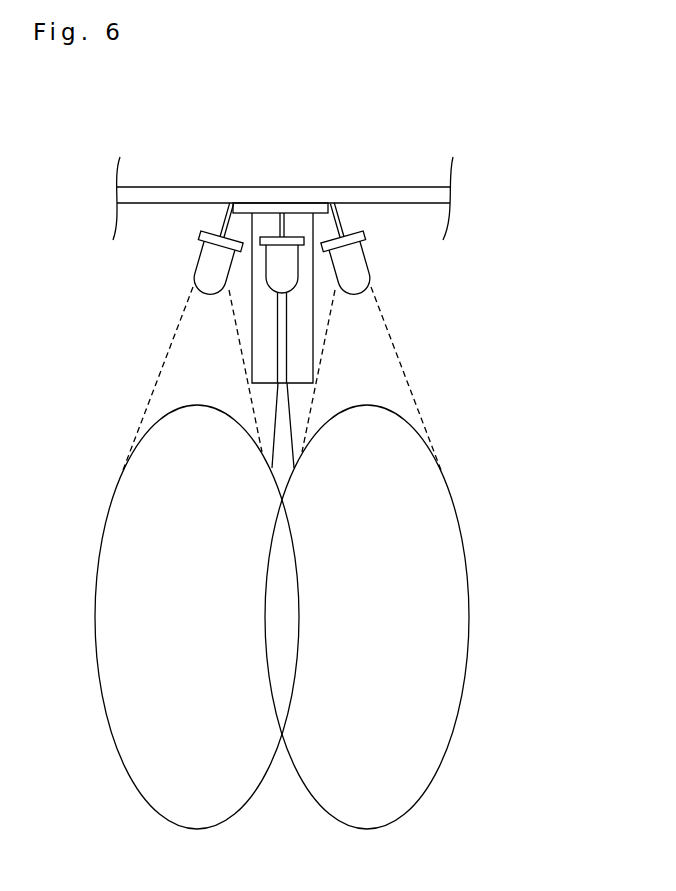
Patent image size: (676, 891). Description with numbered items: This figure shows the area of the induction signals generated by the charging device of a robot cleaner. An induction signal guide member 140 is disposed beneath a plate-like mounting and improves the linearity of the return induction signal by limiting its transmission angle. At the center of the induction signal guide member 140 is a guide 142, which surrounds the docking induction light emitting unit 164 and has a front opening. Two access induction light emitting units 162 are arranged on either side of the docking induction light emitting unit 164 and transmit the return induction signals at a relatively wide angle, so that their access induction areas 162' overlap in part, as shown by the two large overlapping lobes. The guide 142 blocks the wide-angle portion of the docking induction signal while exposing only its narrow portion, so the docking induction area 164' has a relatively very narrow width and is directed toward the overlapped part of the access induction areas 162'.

The induction signal guide member 140 is at (422, 198).
The guide 142 is at (302, 323).
The access induction light emitting unit 162 is at (293, 211).
The docking induction light emitting unit 164 is at (289, 253).
The access induction area 162' is at (282, 576).
The docking induction area 164' is at (399, 417).